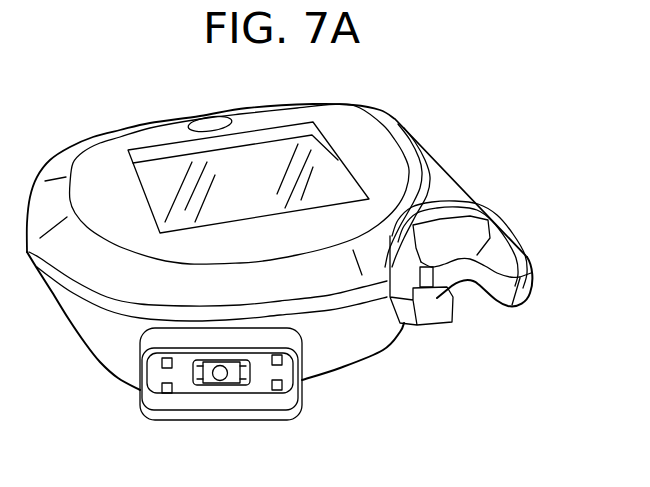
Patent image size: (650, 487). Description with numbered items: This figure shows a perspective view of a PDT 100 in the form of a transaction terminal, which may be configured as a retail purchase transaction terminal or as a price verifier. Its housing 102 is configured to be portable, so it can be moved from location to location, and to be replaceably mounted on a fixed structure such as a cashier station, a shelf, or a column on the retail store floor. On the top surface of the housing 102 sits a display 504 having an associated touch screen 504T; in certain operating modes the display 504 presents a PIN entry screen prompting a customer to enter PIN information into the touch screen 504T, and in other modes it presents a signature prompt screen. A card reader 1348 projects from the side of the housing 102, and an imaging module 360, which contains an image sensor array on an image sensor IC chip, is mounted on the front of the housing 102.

The PDT 100 is at (490, 174).
The housing 102 is at (342, 357).
The imaging module 360 is at (241, 398).
The display 504 is at (318, 156).
The touch screen 504T is at (248, 177).
The card reader 1348 is at (483, 305).